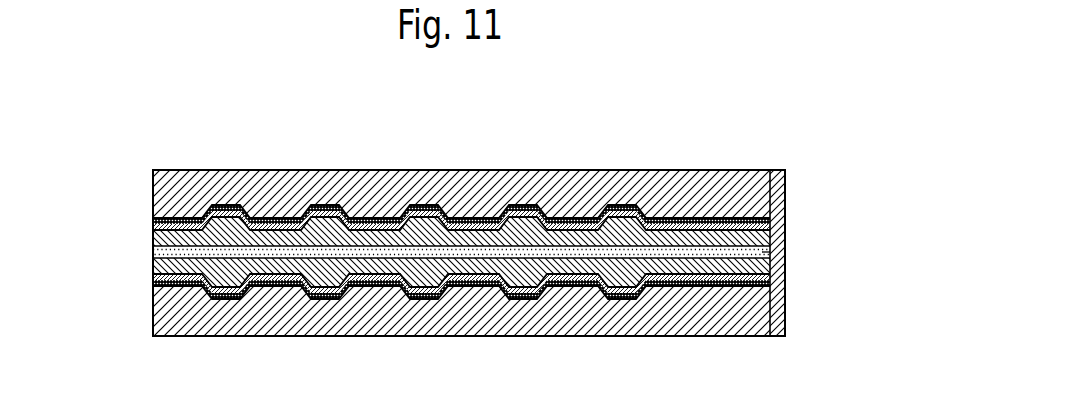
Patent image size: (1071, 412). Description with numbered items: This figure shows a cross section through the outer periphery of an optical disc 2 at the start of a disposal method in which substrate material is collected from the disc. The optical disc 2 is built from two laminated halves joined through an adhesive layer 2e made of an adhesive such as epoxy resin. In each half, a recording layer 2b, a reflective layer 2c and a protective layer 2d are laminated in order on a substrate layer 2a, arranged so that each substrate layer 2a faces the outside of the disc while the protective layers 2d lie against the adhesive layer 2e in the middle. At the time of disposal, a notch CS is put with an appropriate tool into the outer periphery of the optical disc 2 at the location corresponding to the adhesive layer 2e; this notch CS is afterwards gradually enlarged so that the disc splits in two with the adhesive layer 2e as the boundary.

The optical disc 2 is at (464, 237).
The substrate layer 2a is at (155, 196).
The recording layer 2b is at (577, 214).
The reflective layer 2c is at (476, 222).
The protective layer 2d is at (378, 235).
The adhesive layer 2e is at (155, 252).
The notch CS is at (762, 250).